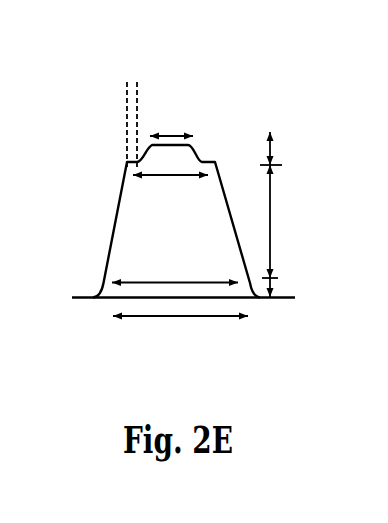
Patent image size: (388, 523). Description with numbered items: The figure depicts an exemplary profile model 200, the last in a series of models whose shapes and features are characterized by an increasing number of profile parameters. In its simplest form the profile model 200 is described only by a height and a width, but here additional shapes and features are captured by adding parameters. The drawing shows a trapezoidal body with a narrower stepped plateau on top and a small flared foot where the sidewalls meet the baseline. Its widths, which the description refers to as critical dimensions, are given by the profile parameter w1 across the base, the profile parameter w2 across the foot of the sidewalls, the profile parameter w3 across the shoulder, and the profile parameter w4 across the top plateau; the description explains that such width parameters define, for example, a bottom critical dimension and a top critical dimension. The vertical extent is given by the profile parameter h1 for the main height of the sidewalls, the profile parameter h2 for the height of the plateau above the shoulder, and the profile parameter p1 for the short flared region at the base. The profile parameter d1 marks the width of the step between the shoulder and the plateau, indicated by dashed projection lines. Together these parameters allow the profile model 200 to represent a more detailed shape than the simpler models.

The profile model 200 is at (213, 118).
The profile parameter d1 is at (160, 85).
The profile parameter w1 is at (180, 346).
The profile parameter w2 is at (175, 267).
The profile parameter w3 is at (170, 192).
The profile parameter w4 is at (171, 119).
The profile parameter h1 is at (290, 221).
The profile parameter h2 is at (288, 148).
The profile parameter p1 is at (290, 280).